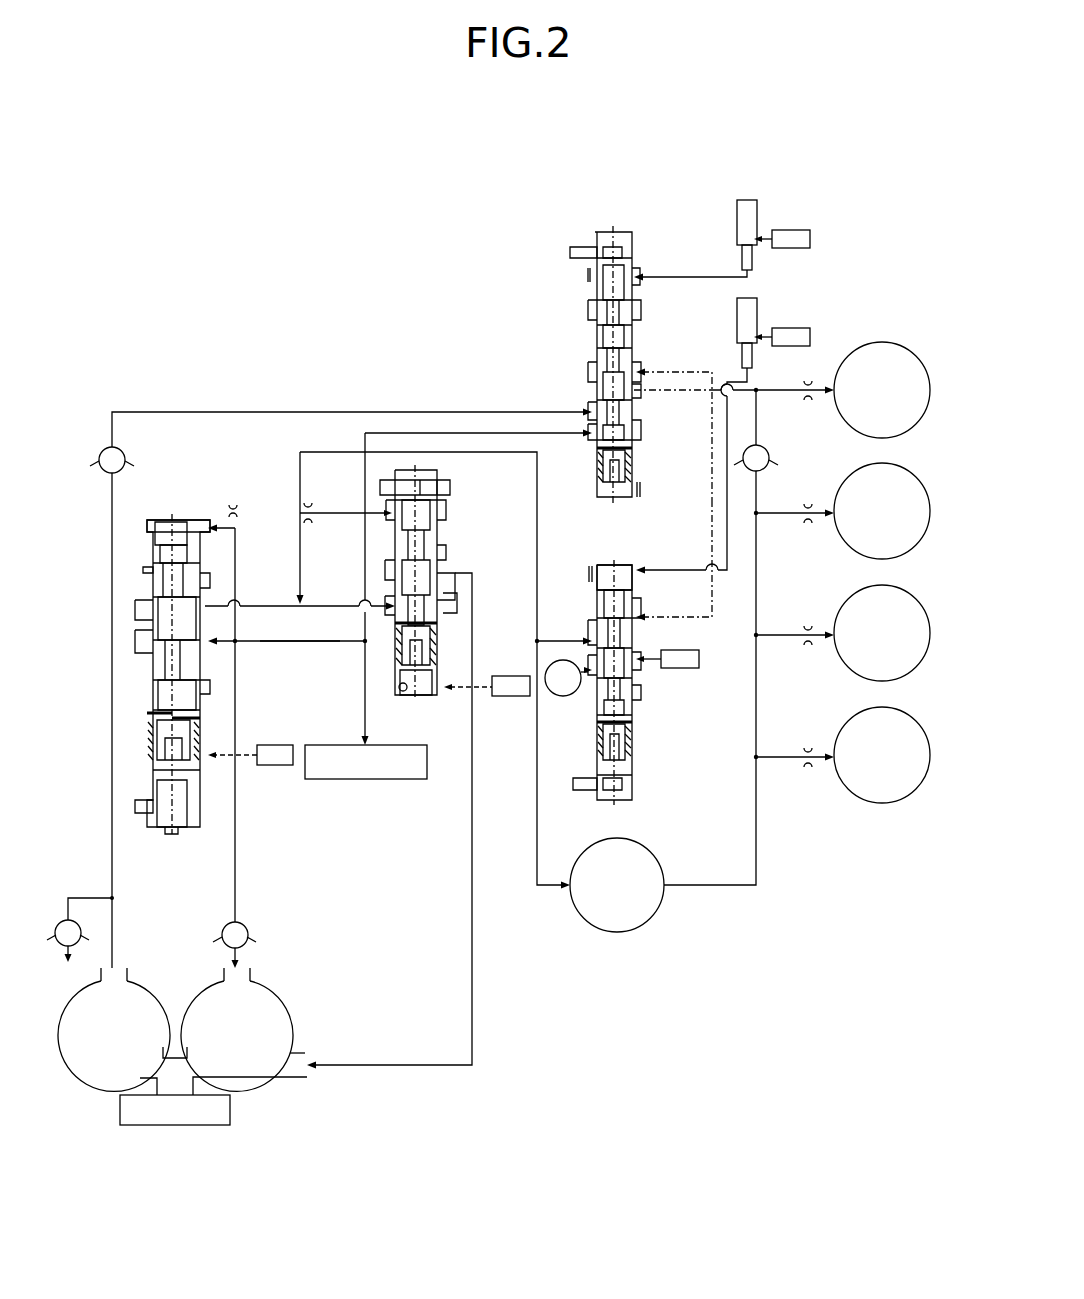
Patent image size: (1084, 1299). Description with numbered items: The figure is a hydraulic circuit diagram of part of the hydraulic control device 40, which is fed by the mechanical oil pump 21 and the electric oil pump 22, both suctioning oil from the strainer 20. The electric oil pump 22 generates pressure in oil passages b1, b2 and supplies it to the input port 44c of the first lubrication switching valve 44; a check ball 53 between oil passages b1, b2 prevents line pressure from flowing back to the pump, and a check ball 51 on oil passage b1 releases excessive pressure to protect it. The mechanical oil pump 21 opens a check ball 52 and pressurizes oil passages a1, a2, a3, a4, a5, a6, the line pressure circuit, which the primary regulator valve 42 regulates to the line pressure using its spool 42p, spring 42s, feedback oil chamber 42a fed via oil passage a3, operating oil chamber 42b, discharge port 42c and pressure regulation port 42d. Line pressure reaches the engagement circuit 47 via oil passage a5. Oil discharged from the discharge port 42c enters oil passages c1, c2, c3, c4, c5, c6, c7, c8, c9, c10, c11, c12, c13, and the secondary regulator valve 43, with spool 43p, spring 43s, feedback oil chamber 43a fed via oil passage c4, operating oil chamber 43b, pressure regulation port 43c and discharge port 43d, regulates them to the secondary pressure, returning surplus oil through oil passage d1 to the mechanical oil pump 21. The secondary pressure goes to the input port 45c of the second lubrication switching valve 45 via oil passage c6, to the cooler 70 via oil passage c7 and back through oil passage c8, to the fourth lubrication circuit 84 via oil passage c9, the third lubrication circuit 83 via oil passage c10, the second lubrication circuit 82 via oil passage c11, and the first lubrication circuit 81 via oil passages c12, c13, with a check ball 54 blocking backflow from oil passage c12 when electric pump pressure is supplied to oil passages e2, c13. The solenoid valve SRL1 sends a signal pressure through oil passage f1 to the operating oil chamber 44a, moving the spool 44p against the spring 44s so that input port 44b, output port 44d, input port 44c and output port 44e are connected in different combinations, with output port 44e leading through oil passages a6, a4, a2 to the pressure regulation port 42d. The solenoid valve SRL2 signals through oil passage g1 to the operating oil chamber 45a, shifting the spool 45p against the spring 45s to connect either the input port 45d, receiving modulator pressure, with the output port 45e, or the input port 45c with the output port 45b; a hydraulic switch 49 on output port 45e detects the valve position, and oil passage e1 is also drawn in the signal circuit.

The hydraulic control device 40 is at (437, 180).
The strainer 20 is at (205, 1125).
The mechanical oil pump 21 is at (253, 988).
The electric oil pump 22 is at (138, 988).
The primary regulator valve 42 is at (159, 512).
The feedback oil chamber 42a is at (176, 520).
The spool 42p is at (180, 550).
The discharge port 42c is at (222, 594).
The pressure regulation port 42d is at (200, 646).
The spring 42s is at (200, 748).
The operating oil chamber 42b is at (195, 770).
The secondary regulator valve 43 is at (456, 482).
The feedback oil chamber 43a is at (446, 508).
The spool 43p is at (438, 530).
The pressure regulation port 43c is at (396, 608).
The discharge port 43d is at (452, 576).
The spring 43s is at (410, 678).
The operating oil chamber 43b is at (406, 688).
The first lubrication switching valve 44 is at (630, 221).
The operating oil chamber 44a is at (638, 276).
The spool 44p is at (602, 296).
The input port 44b is at (638, 372).
The input port 44c is at (590, 412).
The output port 44d is at (636, 390).
The output port 44e is at (588, 433).
The spring 44s is at (634, 466).
The second lubrication switching valve 45 is at (626, 561).
The operating oil chamber 45a is at (592, 565).
The output port 45b is at (634, 615).
The spool 45p is at (624, 625).
The input port 45c is at (592, 640).
The output port 45e is at (590, 672).
The input port 45d is at (636, 661).
The spring 45s is at (634, 735).
The engagement circuit 47 is at (410, 779).
The hydraulic switch 49 is at (563, 697).
The check ball 51 is at (65, 916).
The check ball 52 is at (245, 916).
The check ball 53 is at (105, 441).
The check ball 54 is at (776, 454).
The cooler 70 is at (645, 848).
The first lubrication circuit 81 is at (908, 350).
The second lubrication circuit 82 is at (908, 470).
The third lubrication circuit 83 is at (908, 592).
The fourth lubrication circuit 84 is at (908, 715).
The solenoid valve SRL1 is at (758, 194).
The solenoid valve SRL2 is at (758, 292).
The oil passage a1 is at (236, 845).
The oil passage a2 is at (226, 641).
The oil passage a3 is at (238, 547).
The oil passage a4 is at (300, 643).
The oil passage a5 is at (363, 687).
The oil passage a6 is at (363, 542).
The oil passage b1 is at (110, 790).
The oil passage b2 is at (228, 412).
The oil passage c1 is at (266, 604).
The oil passage c2 is at (320, 604).
The oil passage c3 is at (298, 514).
The oil passage c4 is at (322, 510).
The oil passage c5 is at (538, 514).
The oil passage c6 is at (540, 640).
The oil passage c7 is at (536, 780).
The oil passage c8 is at (760, 825).
The oil passage c9 is at (786, 756).
The oil passage c10 is at (786, 634).
The oil passage c11 is at (786, 512).
The oil passage c12 is at (750, 406).
The oil passage c13 is at (786, 388).
The oil passage d1 is at (473, 729).
The oil passage e1 is at (712, 498).
The oil passage e2 is at (700, 386).
The oil passage f1 is at (726, 276).
The oil passage g1 is at (732, 366).